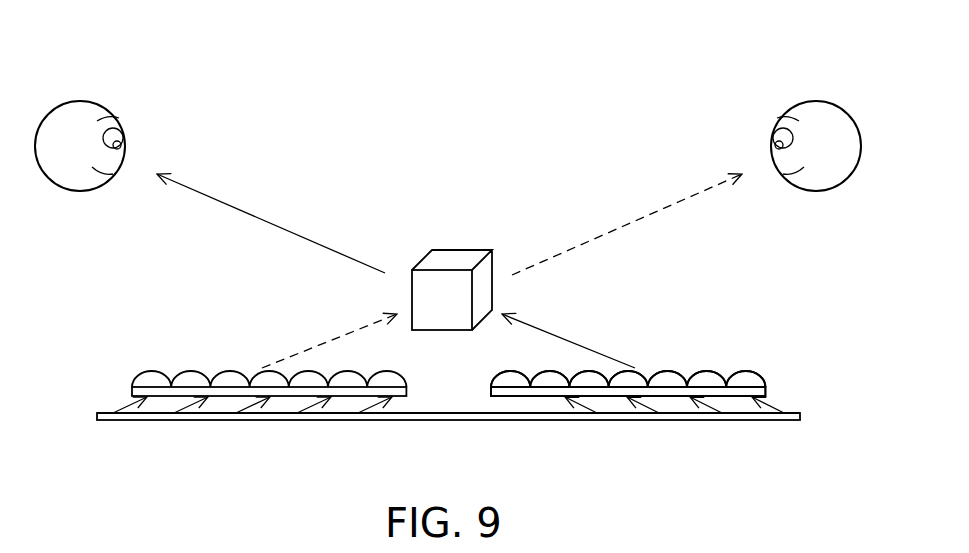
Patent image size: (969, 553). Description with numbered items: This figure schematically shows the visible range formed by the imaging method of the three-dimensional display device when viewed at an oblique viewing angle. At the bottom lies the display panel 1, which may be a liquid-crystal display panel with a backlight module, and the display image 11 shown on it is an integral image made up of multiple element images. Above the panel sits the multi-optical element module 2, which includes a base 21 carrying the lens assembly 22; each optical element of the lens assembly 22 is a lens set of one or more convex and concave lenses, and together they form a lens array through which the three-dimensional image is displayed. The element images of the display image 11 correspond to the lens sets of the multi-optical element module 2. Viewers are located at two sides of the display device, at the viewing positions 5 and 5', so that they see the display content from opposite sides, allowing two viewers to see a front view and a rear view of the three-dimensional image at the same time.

The display panel 1 is at (809, 414).
The display image 11 is at (535, 418).
The multi-optical element module 2 is at (769, 371).
The base 21 is at (757, 392).
The lens assembly 22 is at (742, 374).
The viewing position 5 is at (80, 108).
The viewing position 5' is at (816, 108).